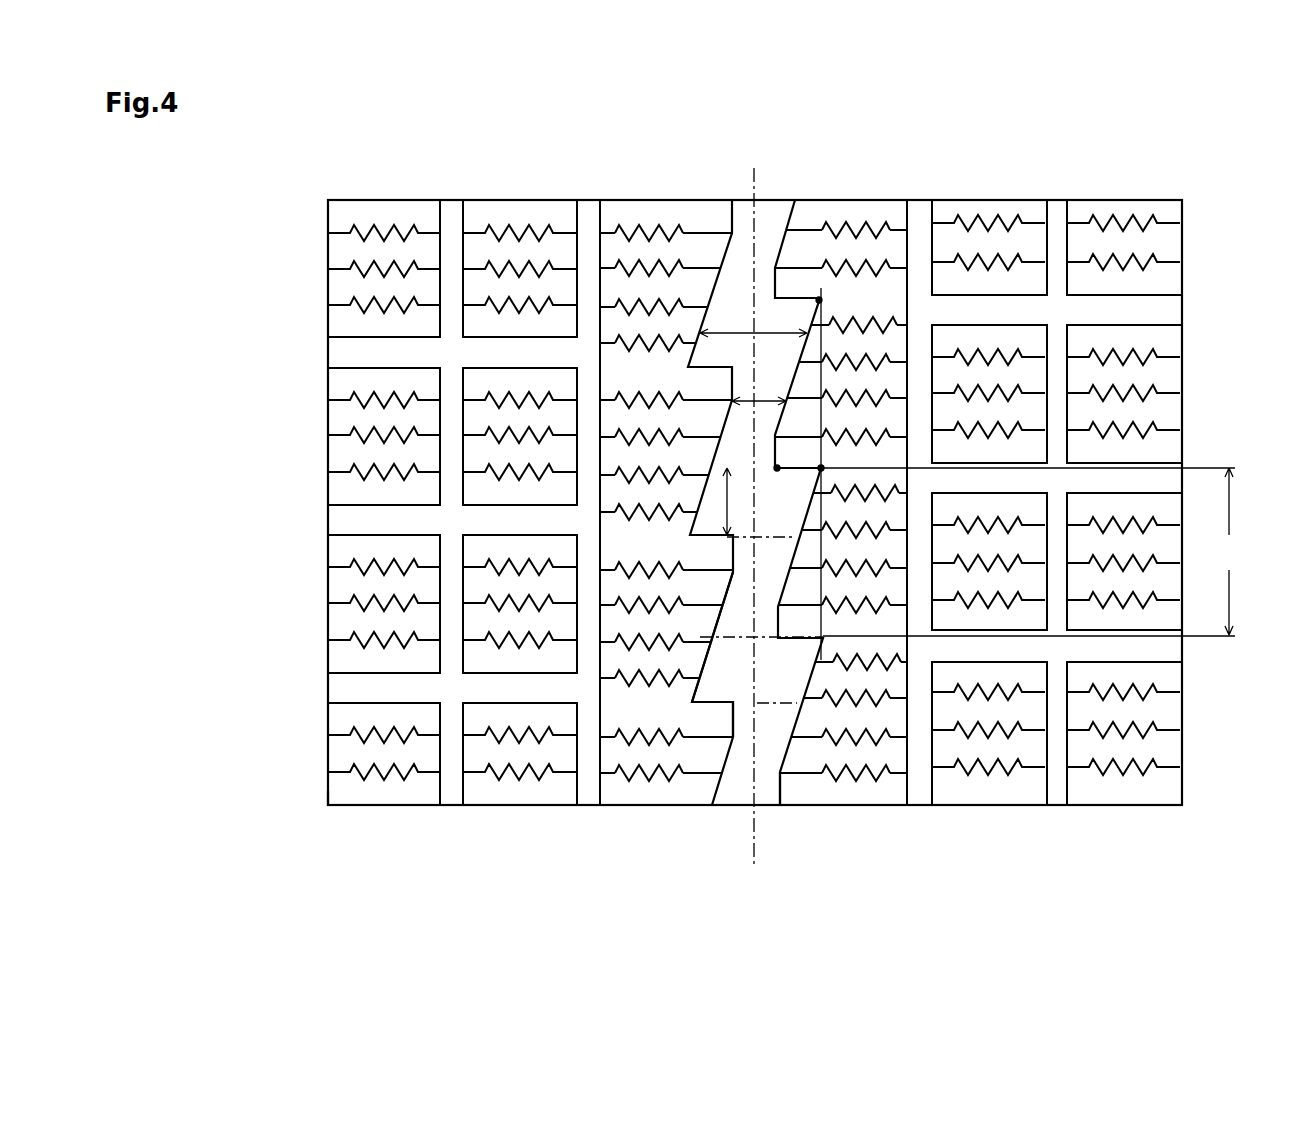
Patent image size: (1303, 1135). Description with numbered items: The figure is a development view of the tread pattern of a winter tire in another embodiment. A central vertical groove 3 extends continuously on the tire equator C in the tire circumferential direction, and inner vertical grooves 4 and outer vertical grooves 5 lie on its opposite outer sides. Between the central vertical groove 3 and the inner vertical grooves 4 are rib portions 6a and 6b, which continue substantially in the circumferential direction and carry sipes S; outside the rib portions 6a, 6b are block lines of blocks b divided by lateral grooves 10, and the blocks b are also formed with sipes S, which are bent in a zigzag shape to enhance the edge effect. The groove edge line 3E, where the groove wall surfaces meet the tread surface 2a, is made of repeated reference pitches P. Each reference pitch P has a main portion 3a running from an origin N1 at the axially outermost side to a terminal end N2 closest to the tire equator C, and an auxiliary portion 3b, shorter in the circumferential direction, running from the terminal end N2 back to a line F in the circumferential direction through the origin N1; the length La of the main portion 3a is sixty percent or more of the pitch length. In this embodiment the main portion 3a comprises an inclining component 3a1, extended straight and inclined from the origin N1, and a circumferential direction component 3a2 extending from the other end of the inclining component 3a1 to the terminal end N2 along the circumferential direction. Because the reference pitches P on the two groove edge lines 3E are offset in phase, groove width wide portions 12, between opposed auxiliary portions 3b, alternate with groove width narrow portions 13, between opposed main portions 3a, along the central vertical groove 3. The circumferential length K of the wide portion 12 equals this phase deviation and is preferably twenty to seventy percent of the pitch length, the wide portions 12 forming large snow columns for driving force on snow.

The lateral groove 10 is at (355, 525).
The block b is at (335, 288).
The sipe S is at (338, 307).
The outer vertical groove 5 is at (450, 215).
The inner vertical groove 4 is at (583, 215).
The rib portion 6b is at (623, 202).
The rib portion 6a is at (803, 213).
The central vertical groove 3 is at (763, 223).
The main portion 3a is at (710, 843).
The inclining component 3a1 is at (795, 550).
The circumferential direction component 3a2 is at (778, 623).
The auxiliary portion 3b is at (797, 640).
The groove edge line 3E is at (774, 799).
The reference pitch P is at (742, 888).
The tire equator C is at (751, 503).
The groove width wide portion 12 is at (740, 333).
The groove width narrow portion 13 is at (768, 400).
The line in the tire circumferential direction F is at (823, 620).
The length of the groove width wide portion K is at (718, 501).
The length of the main portion La is at (1047, 552).
The origin N1 is at (819, 300).
The terminal end N2 is at (777, 468).
The tread surface 2a is at (342, 790).